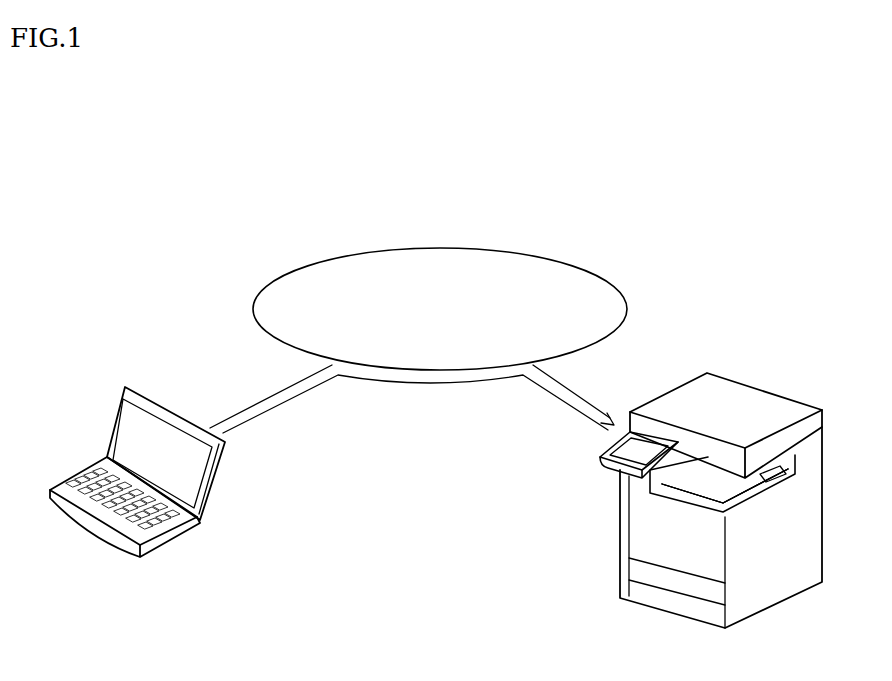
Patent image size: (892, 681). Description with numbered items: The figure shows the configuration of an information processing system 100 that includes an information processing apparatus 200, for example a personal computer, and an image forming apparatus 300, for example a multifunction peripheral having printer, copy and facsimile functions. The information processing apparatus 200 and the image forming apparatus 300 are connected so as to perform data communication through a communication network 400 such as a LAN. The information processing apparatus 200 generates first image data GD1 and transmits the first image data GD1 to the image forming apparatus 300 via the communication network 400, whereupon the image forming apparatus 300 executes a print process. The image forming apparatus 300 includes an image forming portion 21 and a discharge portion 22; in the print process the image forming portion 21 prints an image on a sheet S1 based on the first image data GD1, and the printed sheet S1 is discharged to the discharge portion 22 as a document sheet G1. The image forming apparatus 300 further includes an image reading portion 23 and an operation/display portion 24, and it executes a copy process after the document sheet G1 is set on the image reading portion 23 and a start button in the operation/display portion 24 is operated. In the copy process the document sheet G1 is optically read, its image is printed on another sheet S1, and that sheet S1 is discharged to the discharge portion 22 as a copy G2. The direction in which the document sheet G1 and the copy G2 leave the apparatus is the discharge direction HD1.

The information processing system 100 is at (395, 460).
The information processing apparatus 200 is at (155, 395).
The image forming apparatus 300 is at (752, 370).
The communication network 400 is at (402, 248).
The first image data GD1 is at (412, 399).
The image forming portion 21 is at (752, 552).
The discharge portion 22 is at (710, 513).
The image reading portion 23 is at (798, 400).
The operation/display portion 24 is at (600, 457).
The discharge direction HD1 is at (788, 476).
The sheet S1 is at (703, 490).
The document sheet G1 is at (725, 486).
The copy G2 is at (725, 486).